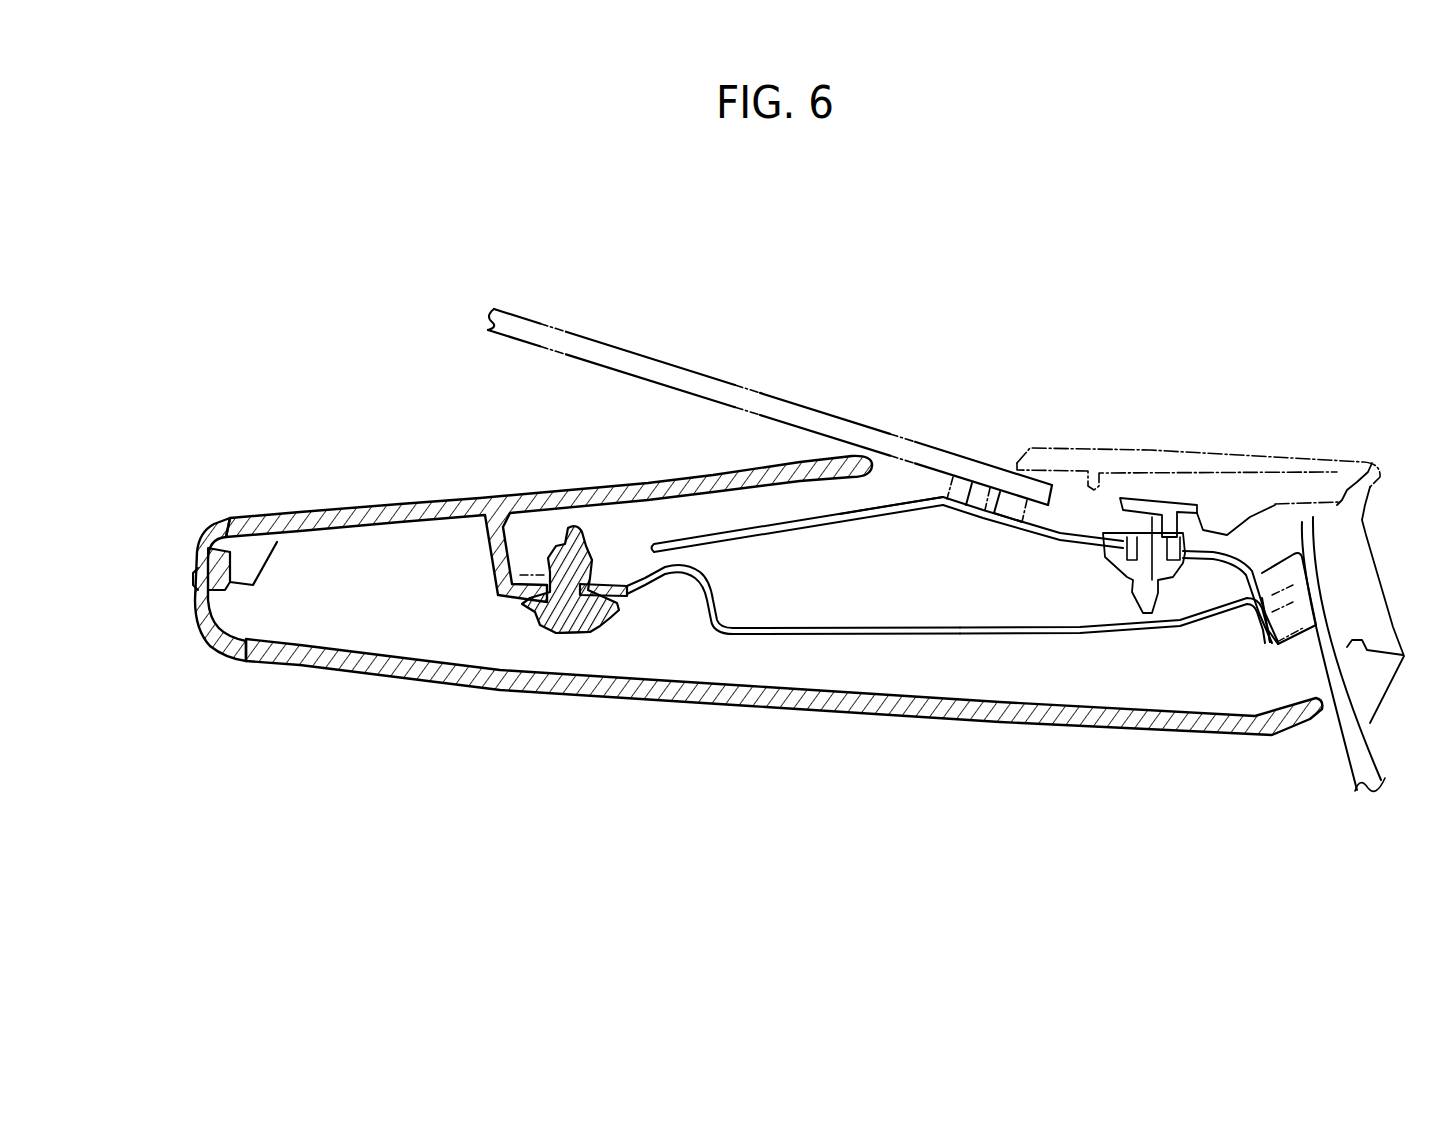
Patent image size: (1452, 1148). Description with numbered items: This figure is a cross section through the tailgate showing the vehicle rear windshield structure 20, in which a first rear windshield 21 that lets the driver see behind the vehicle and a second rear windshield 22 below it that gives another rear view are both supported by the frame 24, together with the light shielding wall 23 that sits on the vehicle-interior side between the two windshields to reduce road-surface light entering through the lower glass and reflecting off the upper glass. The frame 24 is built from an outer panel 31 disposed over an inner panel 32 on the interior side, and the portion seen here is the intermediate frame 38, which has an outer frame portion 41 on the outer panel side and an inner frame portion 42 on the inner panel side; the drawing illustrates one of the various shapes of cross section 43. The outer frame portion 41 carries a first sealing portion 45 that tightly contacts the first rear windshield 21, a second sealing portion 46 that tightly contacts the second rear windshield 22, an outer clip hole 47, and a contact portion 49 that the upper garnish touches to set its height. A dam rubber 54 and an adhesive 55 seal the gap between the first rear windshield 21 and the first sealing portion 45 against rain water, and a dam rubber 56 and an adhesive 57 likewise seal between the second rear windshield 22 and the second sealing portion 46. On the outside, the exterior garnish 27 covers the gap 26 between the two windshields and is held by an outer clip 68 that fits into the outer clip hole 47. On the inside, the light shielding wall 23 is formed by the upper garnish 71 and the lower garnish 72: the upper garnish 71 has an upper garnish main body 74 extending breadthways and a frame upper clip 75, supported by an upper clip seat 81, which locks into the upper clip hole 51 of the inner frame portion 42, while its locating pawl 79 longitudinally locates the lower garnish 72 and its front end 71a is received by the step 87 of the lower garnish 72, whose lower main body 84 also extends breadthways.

The vehicle rear windshield structure 20 is at (310, 185).
The first rear windshield 21 is at (687, 371).
The second rear windshield 22 is at (1326, 658).
The light shielding wall 23 is at (240, 366).
The frame 24 is at (775, 888).
The gap 26 is at (1242, 535).
The exterior garnish 27 is at (1178, 449).
The outer panel 31 is at (717, 547).
The inner panel 32 is at (990, 637).
The intermediate frame 38 is at (975, 816).
The outer frame portion 41 is at (775, 537).
The inner frame portion 42 is at (927, 637).
The cross section 43 is at (925, 557).
The first sealing portion 45 is at (988, 528).
The second sealing portion 46 is at (1263, 628).
The outer clip hole 47 is at (1170, 576).
The contact portion 49 is at (866, 506).
The upper clip hole 51 is at (575, 640).
The dam rubber 54 is at (970, 493).
The adhesive 55 is at (1015, 500).
The dam rubber 56 is at (1293, 620).
The adhesive 57 is at (1274, 567).
The outer clip 68 is at (1155, 530).
The upper garnish 71 is at (303, 512).
The front end 71a is at (203, 572).
The lower garnish 72 is at (455, 663).
The upper garnish main body 74 is at (347, 510).
The frame upper clip 75 is at (574, 528).
The locating pawl 79 is at (256, 555).
The upper clip seat 81 is at (617, 586).
The lower main body 84 is at (412, 667).
The step 87 is at (198, 580).